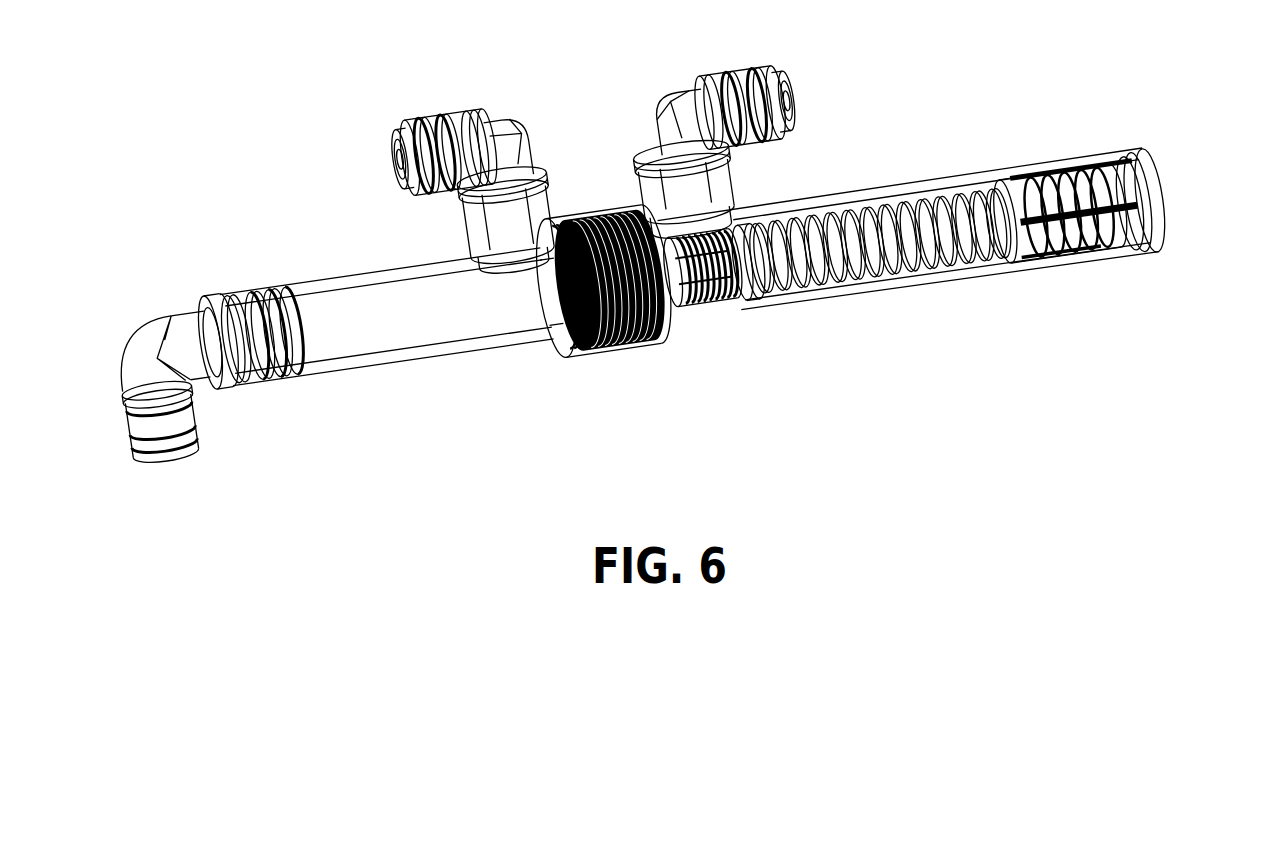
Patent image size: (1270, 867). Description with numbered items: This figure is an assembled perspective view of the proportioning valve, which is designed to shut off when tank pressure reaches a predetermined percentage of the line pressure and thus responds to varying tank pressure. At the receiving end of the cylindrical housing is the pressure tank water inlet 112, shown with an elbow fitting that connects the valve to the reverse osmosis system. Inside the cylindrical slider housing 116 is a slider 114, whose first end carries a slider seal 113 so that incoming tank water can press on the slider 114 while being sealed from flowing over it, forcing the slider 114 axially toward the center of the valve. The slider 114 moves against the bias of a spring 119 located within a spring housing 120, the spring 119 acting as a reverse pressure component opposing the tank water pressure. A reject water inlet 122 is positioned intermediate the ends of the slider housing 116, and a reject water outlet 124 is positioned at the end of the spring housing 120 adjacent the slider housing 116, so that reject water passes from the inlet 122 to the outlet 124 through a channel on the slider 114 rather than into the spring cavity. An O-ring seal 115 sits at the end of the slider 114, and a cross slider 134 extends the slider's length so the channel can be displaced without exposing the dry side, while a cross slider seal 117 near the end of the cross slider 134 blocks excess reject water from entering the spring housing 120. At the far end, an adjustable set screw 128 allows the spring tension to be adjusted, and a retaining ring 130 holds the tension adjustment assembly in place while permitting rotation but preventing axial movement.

The pressure tank water inlet 112 is at (140, 338).
The slider seal 113 is at (277, 310).
The slider 114 is at (365, 330).
The O-ring seal 115 is at (572, 343).
The slider housing 116 is at (339, 276).
The cross slider seal 117 is at (760, 283).
The spring 119 is at (900, 217).
The spring housing 120 is at (958, 276).
The reject water inlet 122 is at (460, 118).
The reject water outlet 124 is at (768, 72).
The adjustable set screw 128 is at (1077, 170).
The retaining ring 130 is at (1143, 197).
The cross slider 134 is at (690, 306).